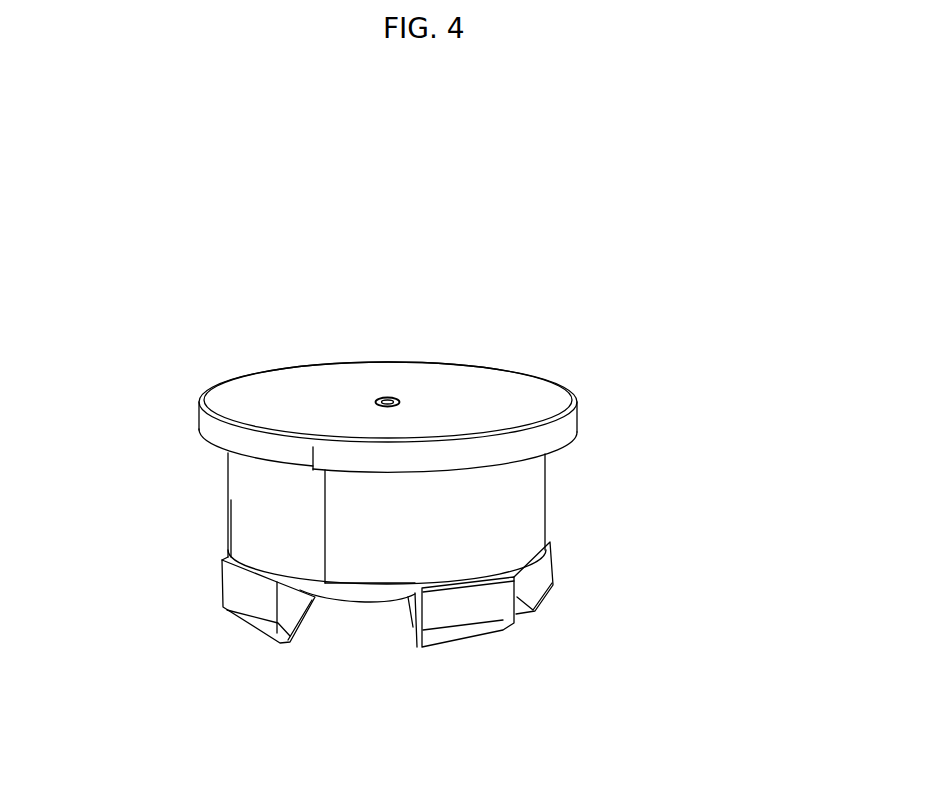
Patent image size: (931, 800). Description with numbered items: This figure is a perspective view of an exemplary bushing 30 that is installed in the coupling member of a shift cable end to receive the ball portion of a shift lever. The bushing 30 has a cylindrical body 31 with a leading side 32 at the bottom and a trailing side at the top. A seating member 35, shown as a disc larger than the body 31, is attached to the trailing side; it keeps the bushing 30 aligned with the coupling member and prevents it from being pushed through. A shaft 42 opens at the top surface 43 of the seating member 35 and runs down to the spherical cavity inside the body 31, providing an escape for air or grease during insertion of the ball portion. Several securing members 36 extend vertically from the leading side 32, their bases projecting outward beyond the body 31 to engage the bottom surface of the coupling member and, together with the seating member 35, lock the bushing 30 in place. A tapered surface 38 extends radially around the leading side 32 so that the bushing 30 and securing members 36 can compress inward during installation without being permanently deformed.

The bushing 30 is at (200, 322).
The body 31 is at (498, 523).
The leading side 32 is at (353, 602).
The seating member 35 is at (227, 438).
The securing members 36 is at (468, 608).
The tapered surface 38 is at (378, 593).
The shaft 42 is at (390, 402).
The top surface 43 is at (482, 397).